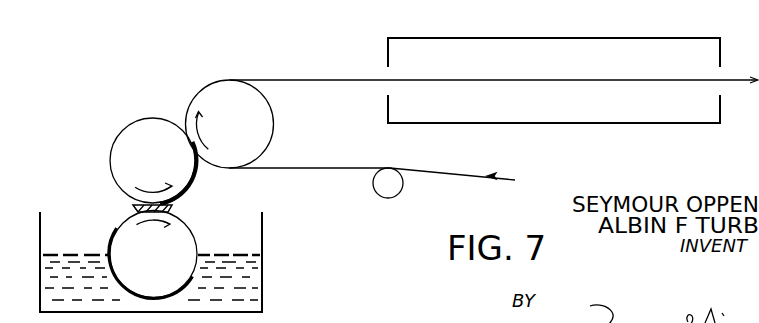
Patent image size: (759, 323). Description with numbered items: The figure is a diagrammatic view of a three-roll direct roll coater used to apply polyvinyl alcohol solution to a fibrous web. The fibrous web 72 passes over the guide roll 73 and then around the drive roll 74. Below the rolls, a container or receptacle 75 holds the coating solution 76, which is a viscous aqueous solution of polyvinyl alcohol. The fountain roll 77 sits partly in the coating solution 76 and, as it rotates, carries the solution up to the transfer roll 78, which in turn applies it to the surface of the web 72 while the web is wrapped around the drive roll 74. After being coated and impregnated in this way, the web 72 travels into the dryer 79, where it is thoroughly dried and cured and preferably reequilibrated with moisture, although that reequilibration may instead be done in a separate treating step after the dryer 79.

The fibrous web 72 is at (420, 170).
The guide roll 73 is at (388, 199).
The drive roll 74 is at (263, 132).
The container or receptacle 75 is at (263, 307).
The coating solution 76 is at (243, 238).
The fountain roll 77 is at (181, 230).
The transfer roll 78 is at (122, 139).
The dryer 79 is at (508, 38).